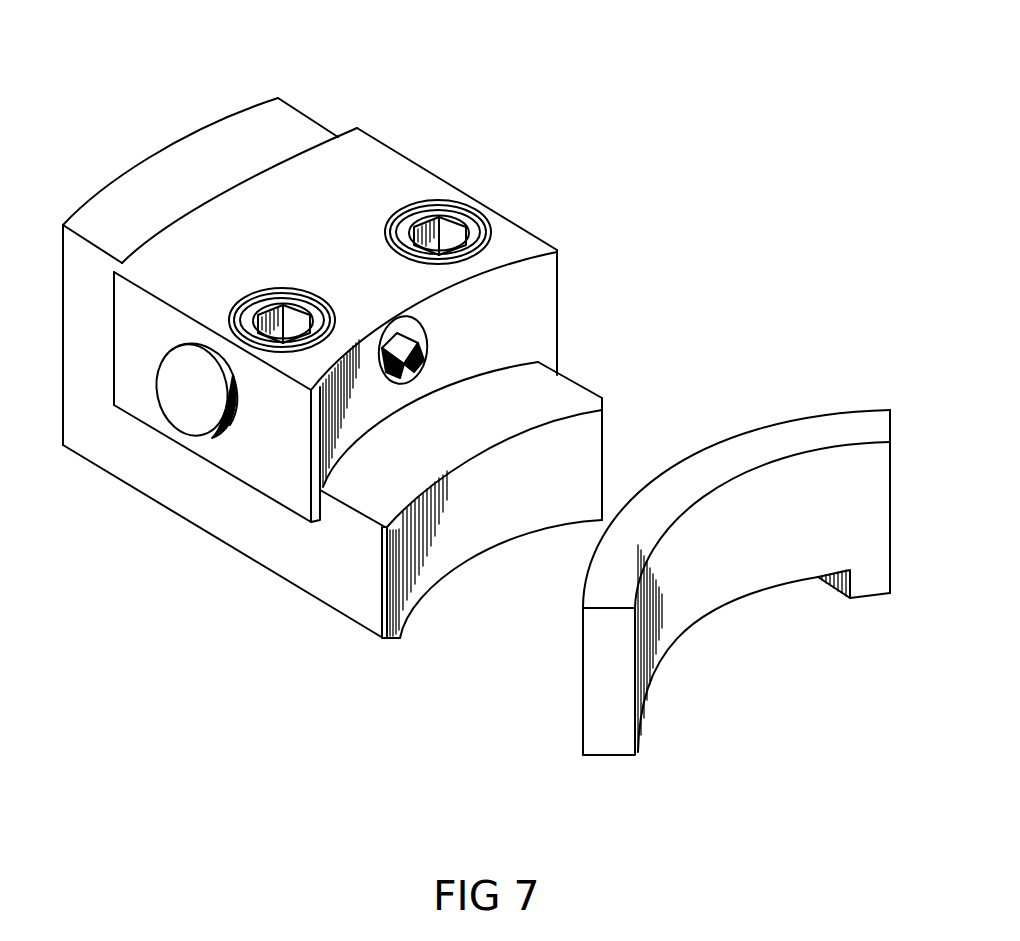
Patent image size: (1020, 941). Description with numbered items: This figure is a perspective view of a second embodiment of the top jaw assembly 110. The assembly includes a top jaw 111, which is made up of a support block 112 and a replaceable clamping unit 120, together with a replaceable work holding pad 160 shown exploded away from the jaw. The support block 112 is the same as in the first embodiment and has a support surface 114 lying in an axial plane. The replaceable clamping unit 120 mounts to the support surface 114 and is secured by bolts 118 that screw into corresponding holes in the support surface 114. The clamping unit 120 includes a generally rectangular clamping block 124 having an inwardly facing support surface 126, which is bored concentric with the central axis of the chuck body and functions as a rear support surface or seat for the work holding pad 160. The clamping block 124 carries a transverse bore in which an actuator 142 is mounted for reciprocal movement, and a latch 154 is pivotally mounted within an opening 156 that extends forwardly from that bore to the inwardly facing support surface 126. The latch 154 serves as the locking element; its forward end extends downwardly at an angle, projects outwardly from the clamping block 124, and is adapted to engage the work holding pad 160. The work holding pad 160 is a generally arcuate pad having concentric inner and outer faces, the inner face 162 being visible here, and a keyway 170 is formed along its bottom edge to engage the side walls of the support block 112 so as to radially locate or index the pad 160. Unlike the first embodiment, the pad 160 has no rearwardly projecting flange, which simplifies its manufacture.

The top jaw assembly 110 is at (370, 342).
The top jaw 111 is at (62, 282).
The support block 112 is at (285, 130).
The support surface 114 is at (547, 395).
The bolts 118 is at (480, 228).
The replaceable clamping unit 120 is at (402, 155).
The clamping block 124 is at (257, 448).
The inwardly facing support surface 126 is at (538, 290).
The actuator 142 is at (192, 397).
The latch 154 is at (428, 350).
The opening 156 is at (385, 363).
The work holding pad 160 is at (788, 418).
The inner face 162 is at (710, 568).
The keyway 170 is at (817, 588).